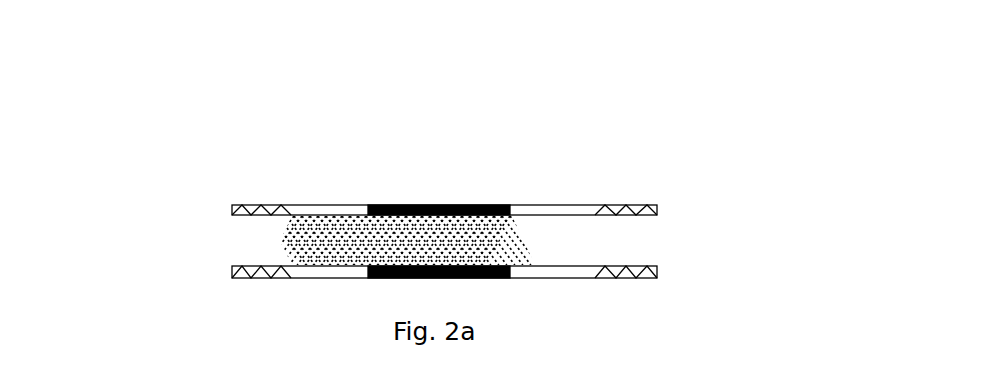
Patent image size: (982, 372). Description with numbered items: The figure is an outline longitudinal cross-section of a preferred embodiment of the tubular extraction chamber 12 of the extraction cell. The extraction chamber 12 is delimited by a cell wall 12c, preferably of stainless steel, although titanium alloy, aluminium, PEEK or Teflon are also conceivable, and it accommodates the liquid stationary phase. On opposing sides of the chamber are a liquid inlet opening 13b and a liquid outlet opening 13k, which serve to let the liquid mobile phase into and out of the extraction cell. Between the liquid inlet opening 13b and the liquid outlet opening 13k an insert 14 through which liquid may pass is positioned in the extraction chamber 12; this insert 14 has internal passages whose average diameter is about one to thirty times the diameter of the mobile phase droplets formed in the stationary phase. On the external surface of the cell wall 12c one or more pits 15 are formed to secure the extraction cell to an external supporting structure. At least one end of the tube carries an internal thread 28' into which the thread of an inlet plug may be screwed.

The extraction chamber 12 is at (630, 116).
The cell wall 12c is at (333, 207).
The liquid inlet opening 13b is at (250, 235).
The liquid outlet opening 13k is at (630, 242).
The insert 14 is at (483, 244).
The pits 15 is at (448, 207).
The thread 28' is at (444, 197).